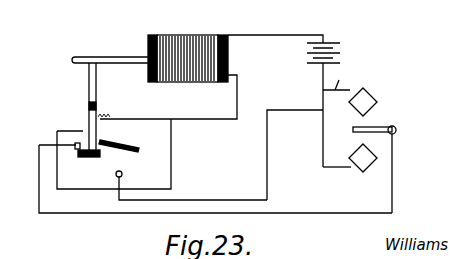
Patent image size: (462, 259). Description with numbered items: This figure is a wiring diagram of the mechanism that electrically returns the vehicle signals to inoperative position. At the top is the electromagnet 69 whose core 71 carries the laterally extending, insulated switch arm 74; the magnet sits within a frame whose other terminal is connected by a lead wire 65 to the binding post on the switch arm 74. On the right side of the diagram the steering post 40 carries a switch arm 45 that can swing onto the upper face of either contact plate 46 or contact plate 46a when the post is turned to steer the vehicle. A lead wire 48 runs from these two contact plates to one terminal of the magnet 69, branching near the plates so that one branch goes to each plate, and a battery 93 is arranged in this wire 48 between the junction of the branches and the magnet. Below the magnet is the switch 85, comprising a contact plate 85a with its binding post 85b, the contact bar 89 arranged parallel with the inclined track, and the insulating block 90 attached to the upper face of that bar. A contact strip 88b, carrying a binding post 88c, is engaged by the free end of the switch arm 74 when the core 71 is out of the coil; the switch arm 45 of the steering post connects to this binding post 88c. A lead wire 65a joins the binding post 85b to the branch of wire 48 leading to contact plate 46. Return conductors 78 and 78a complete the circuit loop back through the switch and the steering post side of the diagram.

The steering post 40 is at (402, 131).
The switch arm 45 is at (381, 126).
The contact plate 46 is at (364, 172).
The contact plate 46a is at (373, 100).
The lead wire 48 is at (335, 167).
The lead wire 65 is at (180, 119).
The lead wire 65a is at (268, 110).
The electromagnet 69 is at (192, 40).
The core 71 is at (118, 57).
The switch arm 74 is at (88, 114).
The wire 78 is at (345, 74).
The return wire 78a is at (398, 177).
The switch 85 is at (114, 154).
The contact plate 85a is at (73, 181).
The binding post 85b is at (122, 173).
The contact plate or strip 88b is at (84, 142).
The binding post 88c is at (75, 143).
The contact bar 89 is at (112, 152).
The insulating block or plate 90 is at (119, 140).
The battery 93 is at (335, 46).